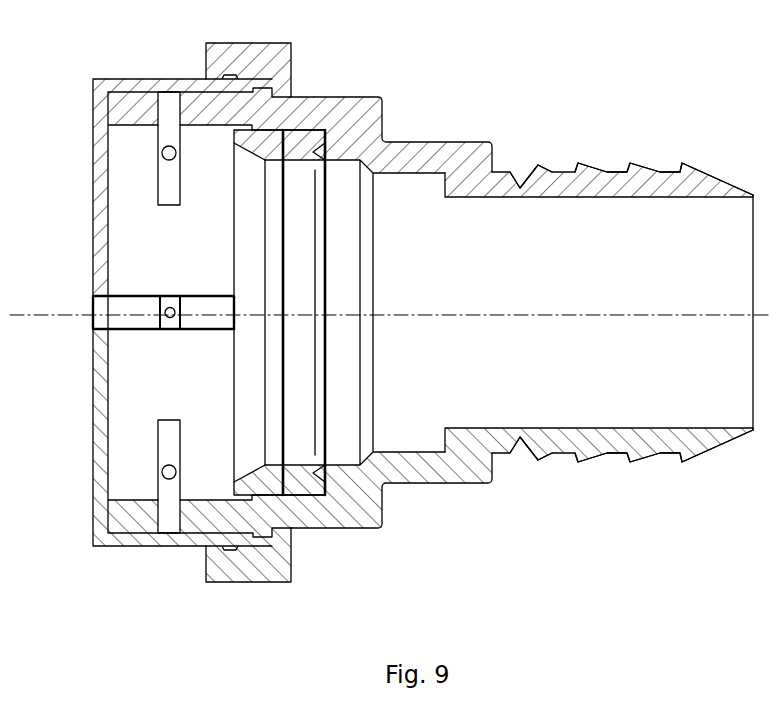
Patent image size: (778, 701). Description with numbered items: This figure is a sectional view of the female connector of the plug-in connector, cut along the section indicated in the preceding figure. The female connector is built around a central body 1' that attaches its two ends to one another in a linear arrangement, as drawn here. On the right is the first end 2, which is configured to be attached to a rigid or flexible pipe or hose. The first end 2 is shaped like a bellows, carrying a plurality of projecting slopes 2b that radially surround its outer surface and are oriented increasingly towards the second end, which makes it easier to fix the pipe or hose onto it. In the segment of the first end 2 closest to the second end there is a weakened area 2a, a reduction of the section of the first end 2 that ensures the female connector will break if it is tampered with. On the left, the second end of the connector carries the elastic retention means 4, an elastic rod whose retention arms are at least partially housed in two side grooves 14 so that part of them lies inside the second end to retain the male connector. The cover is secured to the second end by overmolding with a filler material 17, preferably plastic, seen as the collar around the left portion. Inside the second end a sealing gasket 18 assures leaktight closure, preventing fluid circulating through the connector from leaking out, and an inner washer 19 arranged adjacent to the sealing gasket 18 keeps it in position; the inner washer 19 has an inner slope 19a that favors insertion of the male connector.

The central body 1' is at (292, 336).
The first end 2 is at (599, 322).
The weakened area 2a is at (521, 186).
The projecting slopes 2b is at (597, 171).
The elastic retention means 4 is at (160, 155).
The side grooves 14 is at (168, 183).
The filler material 17 is at (278, 62).
The sealing gasket 18 is at (298, 232).
The inner washer 19 is at (198, 312).
The inner slope 19a is at (255, 466).